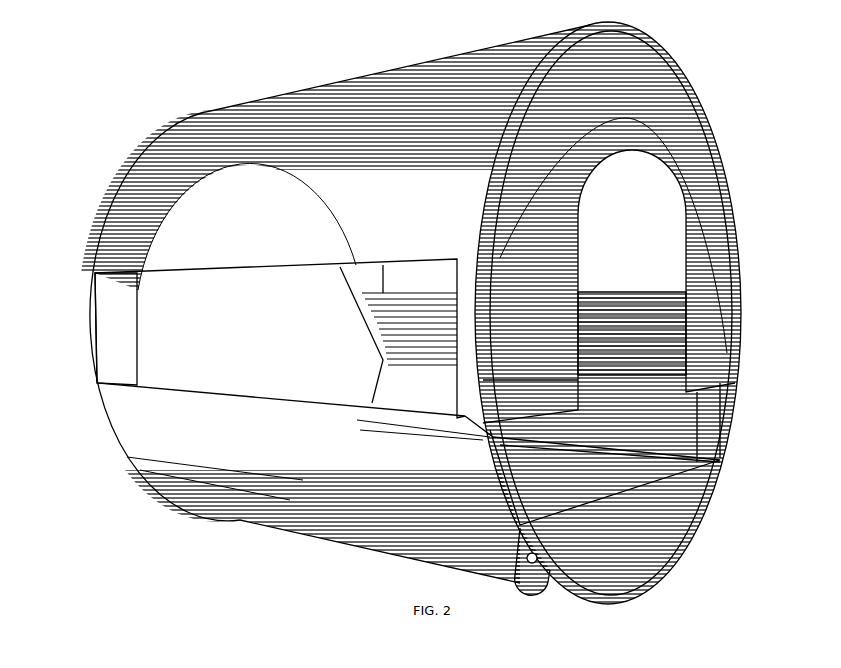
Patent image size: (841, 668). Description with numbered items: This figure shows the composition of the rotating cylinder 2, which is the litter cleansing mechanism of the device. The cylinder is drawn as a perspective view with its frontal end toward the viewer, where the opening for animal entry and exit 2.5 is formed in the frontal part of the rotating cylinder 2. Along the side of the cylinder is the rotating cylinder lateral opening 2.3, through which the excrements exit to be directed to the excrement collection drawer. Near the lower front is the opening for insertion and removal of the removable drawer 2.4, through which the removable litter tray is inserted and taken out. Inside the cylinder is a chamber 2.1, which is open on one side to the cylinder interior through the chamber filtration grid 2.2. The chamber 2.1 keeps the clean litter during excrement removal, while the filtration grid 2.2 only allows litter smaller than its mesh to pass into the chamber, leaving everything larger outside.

The rotating cylinder 2 is at (370, 90).
The chamber 2.1 is at (636, 85).
The chamber filtration grid 2.2 is at (690, 337).
The rotating cylinder lateral opening 2.3 is at (133, 332).
The opening for insertion and removal of removable drawer 2.4 is at (728, 425).
The opening for animal entry and exit 2.5 is at (580, 272).